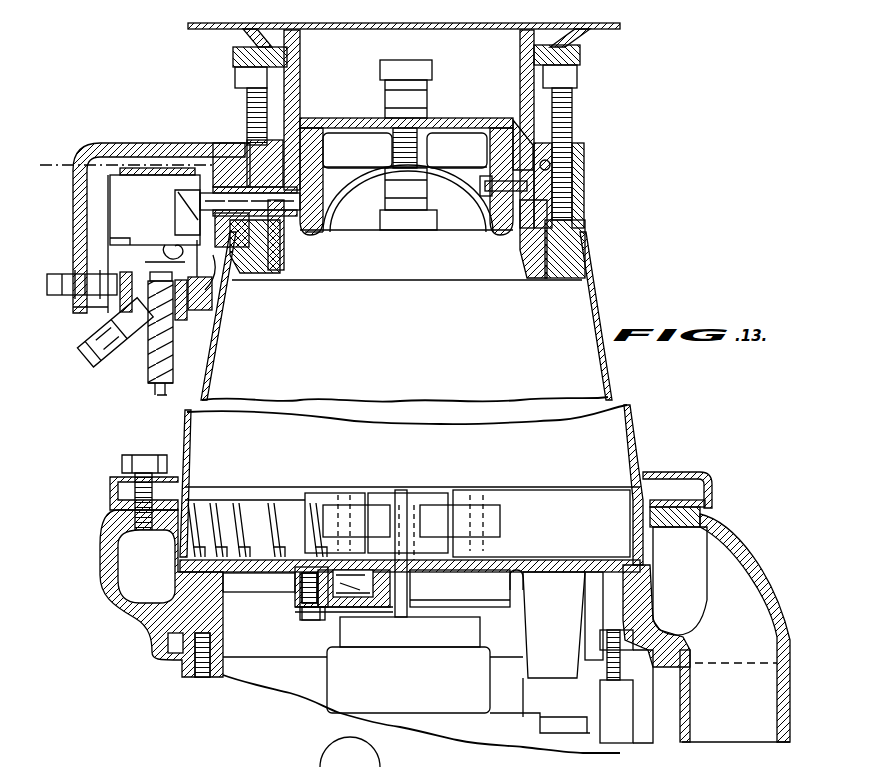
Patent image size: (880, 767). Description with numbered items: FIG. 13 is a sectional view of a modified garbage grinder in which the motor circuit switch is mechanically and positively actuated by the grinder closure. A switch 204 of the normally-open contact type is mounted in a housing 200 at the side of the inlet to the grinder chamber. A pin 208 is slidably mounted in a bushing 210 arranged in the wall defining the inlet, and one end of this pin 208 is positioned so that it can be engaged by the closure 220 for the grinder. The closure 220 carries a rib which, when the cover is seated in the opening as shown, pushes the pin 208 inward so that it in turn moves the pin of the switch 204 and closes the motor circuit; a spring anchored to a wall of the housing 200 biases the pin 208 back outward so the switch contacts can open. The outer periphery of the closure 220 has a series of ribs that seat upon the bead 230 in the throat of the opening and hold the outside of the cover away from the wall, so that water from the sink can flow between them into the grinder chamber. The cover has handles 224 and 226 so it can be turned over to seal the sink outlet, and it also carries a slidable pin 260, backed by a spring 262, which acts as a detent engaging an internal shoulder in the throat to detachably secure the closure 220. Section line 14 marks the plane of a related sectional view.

The section line 14- 14 is at (80, 165).
The housing 200 is at (165, 143).
The switch 204 is at (162, 207).
The pin 208 is at (290, 220).
The bushing 210 is at (330, 197).
The closure 220 is at (318, 118).
The handle 224 is at (435, 65).
The handle 226 is at (423, 217).
The bead 230 is at (305, 147).
The slidable pin 260 is at (513, 205).
The spring 262 is at (455, 140).